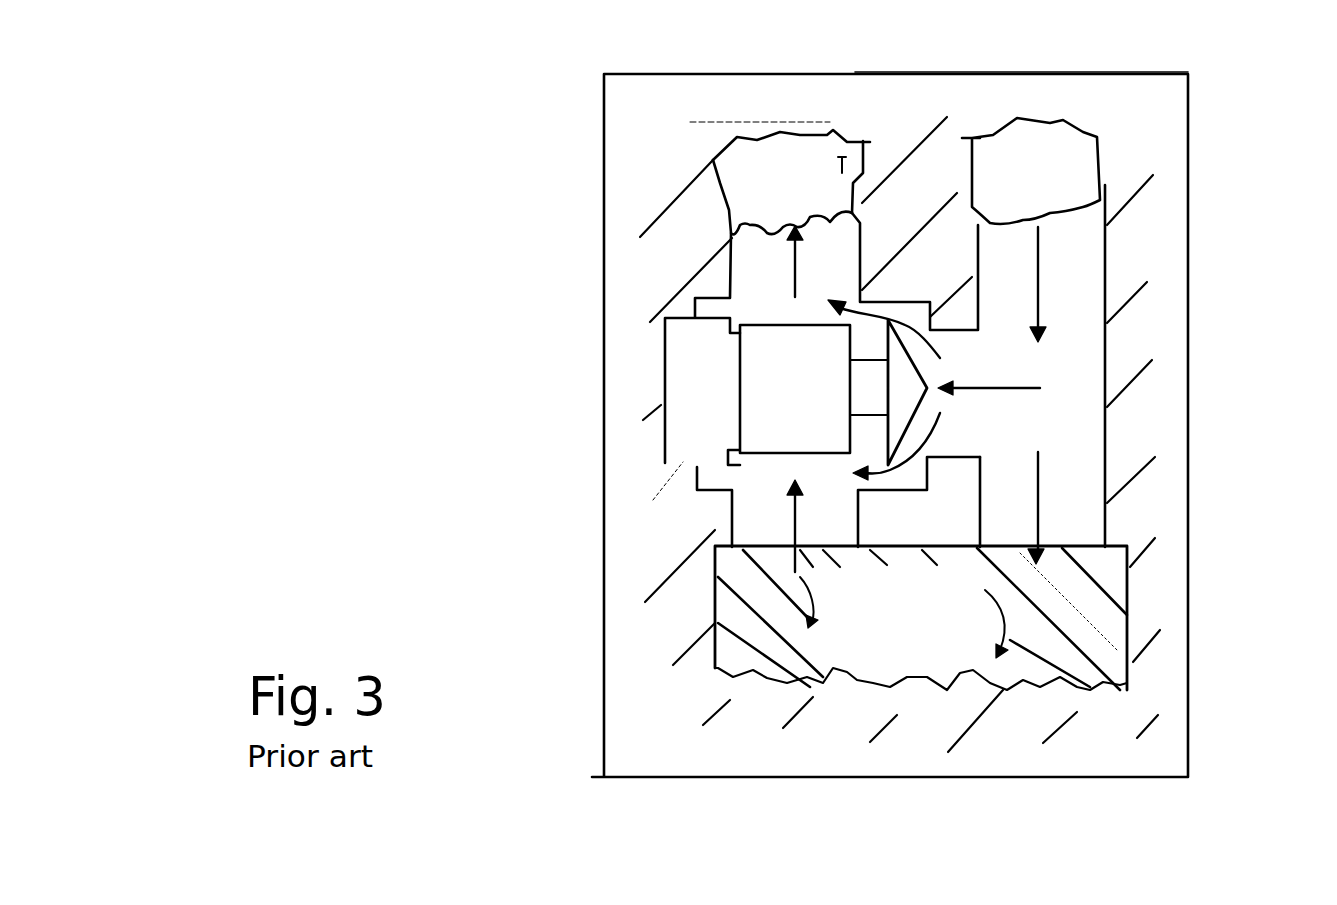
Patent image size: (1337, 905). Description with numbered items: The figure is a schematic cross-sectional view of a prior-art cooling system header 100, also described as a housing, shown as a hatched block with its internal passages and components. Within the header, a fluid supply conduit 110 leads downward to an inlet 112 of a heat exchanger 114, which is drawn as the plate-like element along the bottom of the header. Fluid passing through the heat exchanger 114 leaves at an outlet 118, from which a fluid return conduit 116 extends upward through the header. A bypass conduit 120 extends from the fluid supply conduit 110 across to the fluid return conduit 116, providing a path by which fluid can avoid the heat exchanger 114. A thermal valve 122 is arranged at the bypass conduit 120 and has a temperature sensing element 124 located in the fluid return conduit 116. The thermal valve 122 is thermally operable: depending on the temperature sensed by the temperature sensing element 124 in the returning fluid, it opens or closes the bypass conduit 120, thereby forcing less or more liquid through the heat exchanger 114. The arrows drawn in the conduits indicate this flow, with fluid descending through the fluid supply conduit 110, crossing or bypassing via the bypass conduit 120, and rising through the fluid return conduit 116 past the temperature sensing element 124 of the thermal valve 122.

The cooling system header 100 is at (532, 130).
The fluid supply conduit 110 is at (1088, 272).
The inlet 112 is at (1077, 542).
The heat exchanger 114 is at (1100, 610).
The fluid return conduit 116 is at (762, 268).
The outlet 118 is at (748, 546).
The bypass conduit 120 is at (962, 362).
The thermal valve 122 is at (756, 427).
The temperature sensing element 124 is at (790, 322).